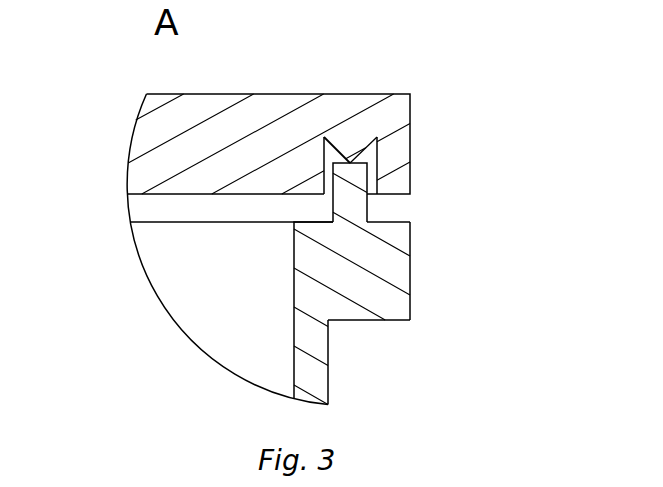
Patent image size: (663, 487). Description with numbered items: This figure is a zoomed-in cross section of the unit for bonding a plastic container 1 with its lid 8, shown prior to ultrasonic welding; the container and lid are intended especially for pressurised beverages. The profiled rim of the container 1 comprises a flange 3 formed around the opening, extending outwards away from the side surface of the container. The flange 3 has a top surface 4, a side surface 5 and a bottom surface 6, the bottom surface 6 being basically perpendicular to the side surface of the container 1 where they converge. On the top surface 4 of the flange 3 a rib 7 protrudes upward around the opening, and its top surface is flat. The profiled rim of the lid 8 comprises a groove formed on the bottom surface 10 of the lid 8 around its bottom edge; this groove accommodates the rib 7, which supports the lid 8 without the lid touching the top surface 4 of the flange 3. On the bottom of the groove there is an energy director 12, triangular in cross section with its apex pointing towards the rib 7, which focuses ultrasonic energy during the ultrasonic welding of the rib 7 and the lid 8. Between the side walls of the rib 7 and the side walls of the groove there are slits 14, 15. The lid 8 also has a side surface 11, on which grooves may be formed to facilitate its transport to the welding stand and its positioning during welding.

The container 1 is at (324, 380).
The flange 3 is at (342, 278).
The top surface 4 is at (369, 216).
The side surface 5 is at (411, 271).
The bottom surface 6 is at (362, 320).
The rib 7 is at (353, 204).
The lid 8 is at (163, 125).
The bottom surface 10 is at (177, 197).
The side surface 11 is at (380, 177).
The energy director 12 is at (352, 159).
The slit 14 is at (324, 137).
The slit 15 is at (381, 137).